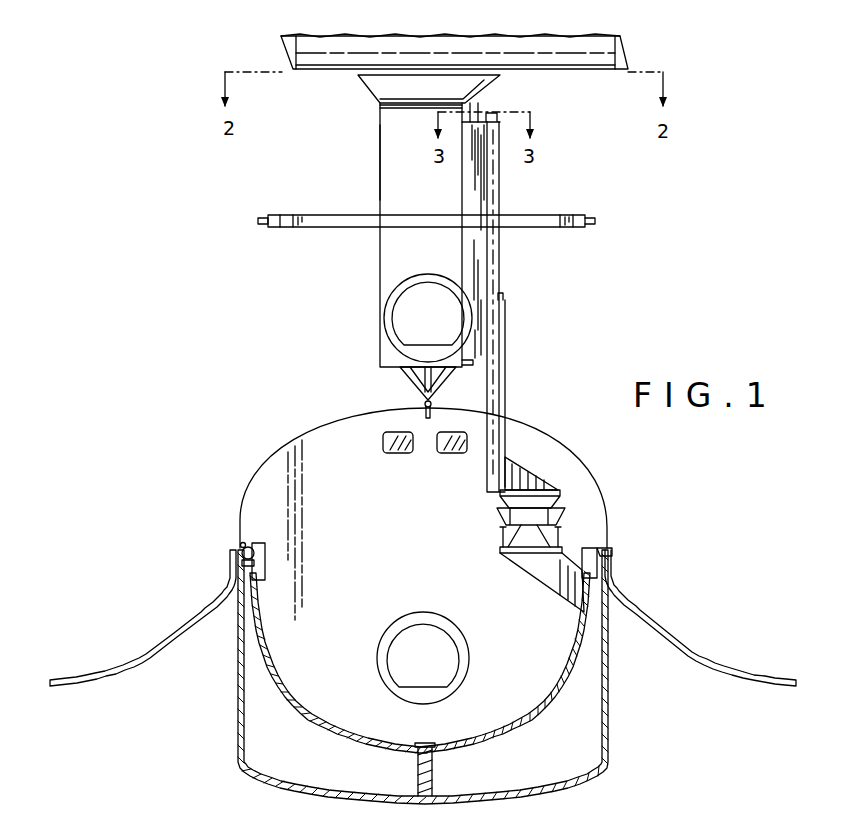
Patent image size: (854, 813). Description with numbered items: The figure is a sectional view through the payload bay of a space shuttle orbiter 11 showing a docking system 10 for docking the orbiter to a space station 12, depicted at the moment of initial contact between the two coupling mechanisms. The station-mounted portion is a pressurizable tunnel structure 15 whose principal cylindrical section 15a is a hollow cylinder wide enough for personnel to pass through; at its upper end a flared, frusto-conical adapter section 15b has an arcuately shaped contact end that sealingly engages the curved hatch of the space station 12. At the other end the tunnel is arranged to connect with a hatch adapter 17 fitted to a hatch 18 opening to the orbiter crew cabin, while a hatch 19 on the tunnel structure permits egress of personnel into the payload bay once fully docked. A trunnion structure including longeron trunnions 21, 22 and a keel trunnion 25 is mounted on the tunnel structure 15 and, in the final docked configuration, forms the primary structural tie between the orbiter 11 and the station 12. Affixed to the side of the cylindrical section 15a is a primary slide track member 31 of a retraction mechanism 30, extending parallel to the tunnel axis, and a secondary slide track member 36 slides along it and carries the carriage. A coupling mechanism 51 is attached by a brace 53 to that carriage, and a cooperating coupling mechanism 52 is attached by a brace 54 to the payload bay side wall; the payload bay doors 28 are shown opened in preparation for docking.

The docking system 10 is at (576, 293).
The space shuttle orbiter 11 is at (262, 470).
The space station 12 is at (281, 48).
The pressurizable tunnel structure 15 is at (378, 164).
The cylindrical tunnel section 15a is at (379, 137).
The flared adapter section 15b is at (366, 90).
The hatch adapter 17 is at (379, 679).
The hatch 18 is at (400, 644).
The hatch 19 is at (412, 292).
The longeron trunnion 21 is at (590, 215).
The longeron trunnion 22 is at (263, 216).
The keel trunnion 25 is at (424, 409).
The payload bay doors 28 is at (147, 655).
The retraction mechanism 30 is at (500, 255).
The primary slide track member 31 is at (500, 188).
The secondary slide track member 36 is at (507, 405).
The coupling mechanism 51 is at (540, 500).
The coupling mechanism 52 is at (560, 516).
The brace 53 is at (537, 480).
The brace 54 is at (553, 590).